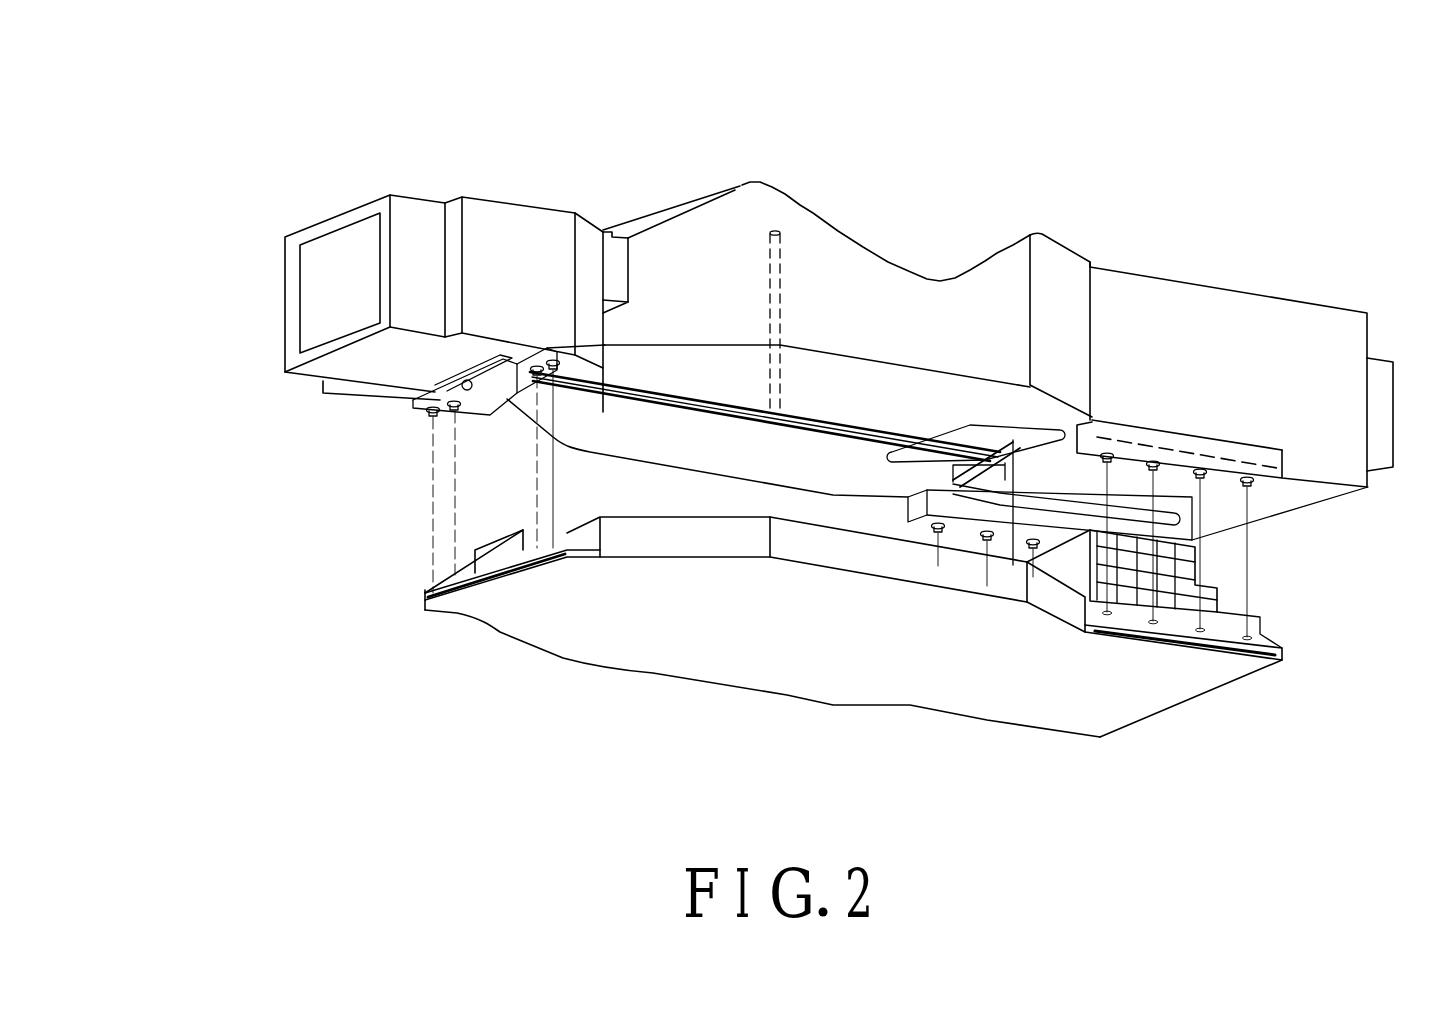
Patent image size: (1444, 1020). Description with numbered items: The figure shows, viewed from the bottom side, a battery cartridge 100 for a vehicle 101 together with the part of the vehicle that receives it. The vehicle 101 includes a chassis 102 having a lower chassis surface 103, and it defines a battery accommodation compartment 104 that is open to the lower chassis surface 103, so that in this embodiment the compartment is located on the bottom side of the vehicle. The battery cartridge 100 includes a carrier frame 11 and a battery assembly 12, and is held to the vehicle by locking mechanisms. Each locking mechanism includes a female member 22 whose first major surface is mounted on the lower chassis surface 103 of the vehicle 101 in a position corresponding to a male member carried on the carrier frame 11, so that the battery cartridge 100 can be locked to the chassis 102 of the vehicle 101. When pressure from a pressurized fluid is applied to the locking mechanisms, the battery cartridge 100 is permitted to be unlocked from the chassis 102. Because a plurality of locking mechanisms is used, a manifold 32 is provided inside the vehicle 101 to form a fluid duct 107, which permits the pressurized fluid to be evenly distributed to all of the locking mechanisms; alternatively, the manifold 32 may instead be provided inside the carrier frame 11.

The vehicle 101 is at (759, 334).
The battery cartridge 100 is at (721, 653).
The carrier frame 11 is at (513, 647).
The battery assembly 12 is at (1222, 603).
The female member 22 is at (413, 402).
The chassis 102 is at (433, 434).
The lower chassis surface 103 is at (423, 428).
The manifold 32 is at (922, 440).
The fluid duct 107 is at (1015, 452).
The battery accommodation compartment 104 is at (1253, 498).